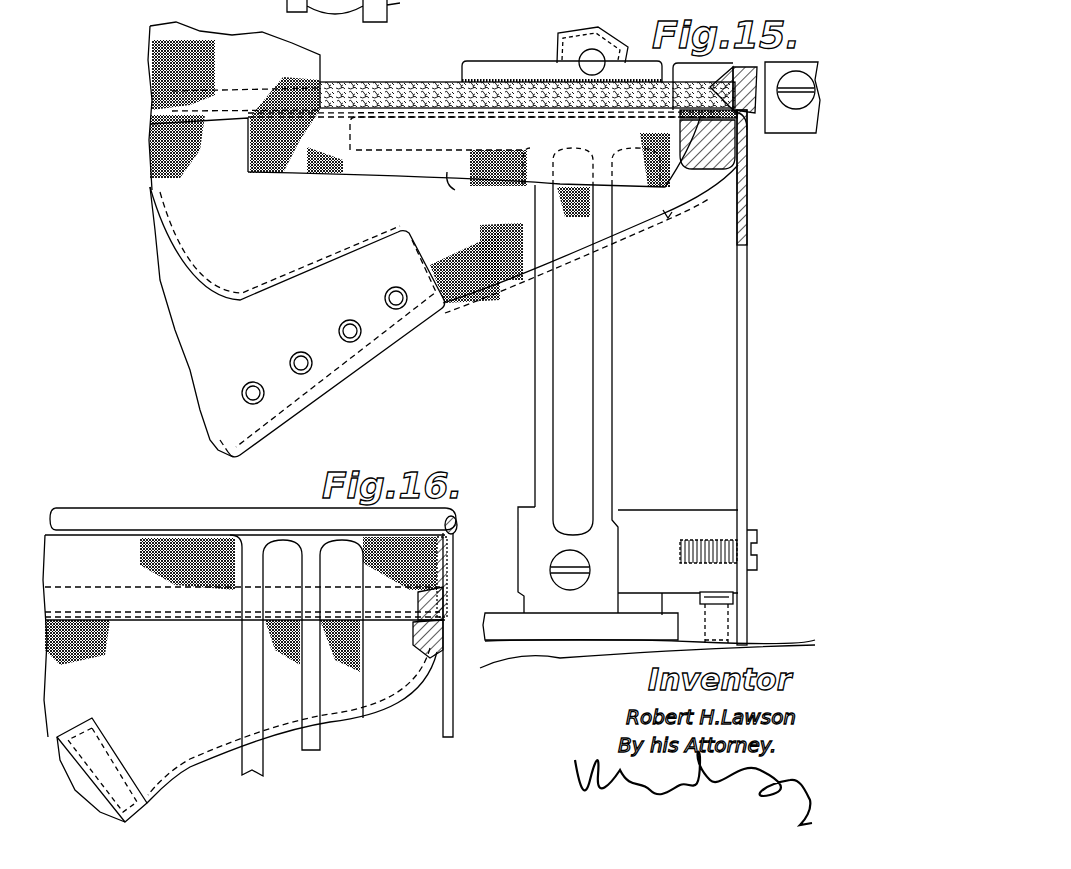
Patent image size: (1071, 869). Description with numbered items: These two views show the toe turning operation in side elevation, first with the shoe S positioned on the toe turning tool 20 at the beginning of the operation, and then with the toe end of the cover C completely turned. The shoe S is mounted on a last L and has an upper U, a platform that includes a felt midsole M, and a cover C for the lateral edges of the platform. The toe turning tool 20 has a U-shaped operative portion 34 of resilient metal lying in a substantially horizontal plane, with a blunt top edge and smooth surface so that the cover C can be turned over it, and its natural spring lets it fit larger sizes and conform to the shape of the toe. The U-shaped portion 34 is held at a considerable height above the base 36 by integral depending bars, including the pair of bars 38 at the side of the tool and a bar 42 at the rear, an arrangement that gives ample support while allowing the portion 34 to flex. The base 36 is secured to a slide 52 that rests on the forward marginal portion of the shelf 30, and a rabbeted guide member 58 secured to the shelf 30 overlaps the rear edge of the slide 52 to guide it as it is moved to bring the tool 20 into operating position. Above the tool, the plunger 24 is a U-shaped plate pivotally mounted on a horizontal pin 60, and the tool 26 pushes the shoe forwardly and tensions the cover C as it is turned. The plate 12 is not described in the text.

In FIG. 16, the plate 12 is at (450, 714).
In FIG. 15, the toe turning tool 20 is at (777, 315).
In FIG. 16, the toe turning tool 20 is at (124, 485).
In FIG. 15, the plunger 24 is at (487, 62).
In FIG. 15, the tool 26 is at (752, 97).
In FIG. 15, the shelf 30 is at (758, 640).
In FIG. 15, the U-shaped operative portion 34 is at (440, 143).
In FIG. 16, the U-shaped operative portion 34 is at (162, 518).
In FIG. 15, the base 36 is at (653, 518).
In FIG. 15, the pair of bars 38 is at (597, 338).
In FIG. 16, the pair of bars 38 is at (303, 668).
In FIG. 15, the bar 42 is at (738, 337).
In FIG. 15, the slide 52 is at (500, 620).
In FIG. 15, the rabbeted guide member 58 is at (738, 603).
In FIG. 15, the horizontal pin 60 is at (594, 58).
In FIG. 15, the cover C is at (152, 34).
In FIG. 16, the cover C is at (200, 608).
In FIG. 15, the last L is at (713, 150).
In FIG. 16, the last L is at (440, 637).
In FIG. 15, the felt midsole M is at (733, 72).
In FIG. 16, the felt midsole M is at (437, 587).
In FIG. 15, the shoe S is at (402, 364).
In FIG. 16, the shoe S is at (218, 791).
In FIG. 15, the upper U is at (628, 213).
In FIG. 16, the upper U is at (343, 708).